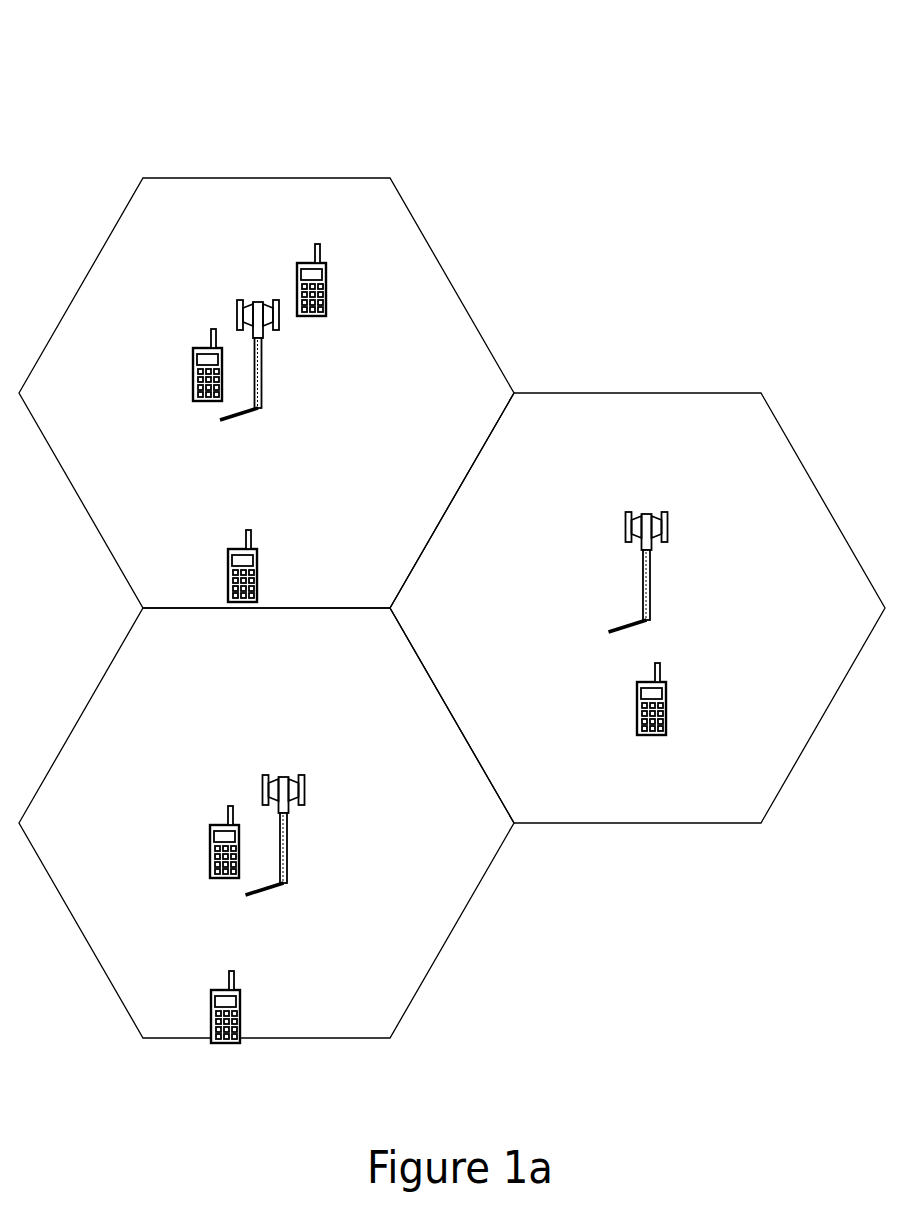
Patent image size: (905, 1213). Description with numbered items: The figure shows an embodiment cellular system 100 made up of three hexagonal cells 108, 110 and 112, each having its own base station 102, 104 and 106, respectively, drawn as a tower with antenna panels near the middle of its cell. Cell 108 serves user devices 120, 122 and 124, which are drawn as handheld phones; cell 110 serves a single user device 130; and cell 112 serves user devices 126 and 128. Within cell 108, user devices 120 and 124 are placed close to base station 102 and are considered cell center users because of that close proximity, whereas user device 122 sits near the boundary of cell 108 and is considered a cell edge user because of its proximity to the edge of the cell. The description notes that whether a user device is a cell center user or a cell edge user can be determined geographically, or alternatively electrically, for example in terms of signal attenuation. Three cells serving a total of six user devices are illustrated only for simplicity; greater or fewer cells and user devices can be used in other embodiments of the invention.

The cellular system 100 is at (193, 66).
The base station 102 is at (277, 391).
The base station 104 is at (658, 588).
The base station 106 is at (294, 855).
The cell 108 is at (190, 212).
The cell 110 is at (565, 428).
The cell 112 is at (182, 648).
The user device 120 is at (193, 378).
The user device 122 is at (228, 580).
The user device 124 is at (297, 292).
The user device 126 is at (210, 855).
The user device 128 is at (211, 1022).
The user device 130 is at (637, 712).